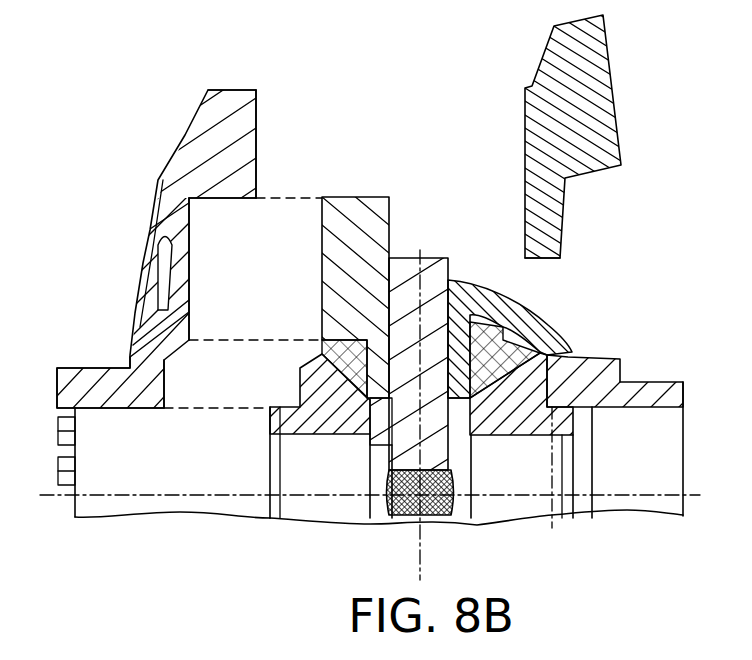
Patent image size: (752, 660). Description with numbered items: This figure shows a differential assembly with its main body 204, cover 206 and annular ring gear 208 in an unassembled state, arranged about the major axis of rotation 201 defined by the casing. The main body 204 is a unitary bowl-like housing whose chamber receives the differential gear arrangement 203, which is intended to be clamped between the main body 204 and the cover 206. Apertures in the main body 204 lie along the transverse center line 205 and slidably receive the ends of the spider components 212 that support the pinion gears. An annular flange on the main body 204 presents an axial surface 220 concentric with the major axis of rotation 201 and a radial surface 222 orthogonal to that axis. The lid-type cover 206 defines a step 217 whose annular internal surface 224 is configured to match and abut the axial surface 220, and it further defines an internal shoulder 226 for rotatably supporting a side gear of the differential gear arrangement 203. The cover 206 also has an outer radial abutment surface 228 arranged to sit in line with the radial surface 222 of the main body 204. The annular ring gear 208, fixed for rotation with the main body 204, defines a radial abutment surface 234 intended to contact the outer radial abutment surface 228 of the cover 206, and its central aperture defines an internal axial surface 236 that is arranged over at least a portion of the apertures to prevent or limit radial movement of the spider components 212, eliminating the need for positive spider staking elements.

The major axis of rotation 201 is at (648, 483).
The differential gear arrangement 203 is at (349, 470).
The main body 204 is at (671, 388).
The transverse center line 205 is at (423, 555).
The cover 206 is at (80, 375).
The annular ring gear 208 is at (607, 77).
The spider component 212 is at (436, 260).
The step 217 is at (225, 172).
The axial surface 220 is at (358, 197).
The radial surface 222 is at (392, 216).
The annular internal surface 224 is at (222, 200).
The internal shoulder 226 is at (150, 410).
The outer radial abutment surface 228 is at (257, 118).
The radial abutment surface 234 is at (526, 104).
The internal axial surface 236 is at (540, 258).